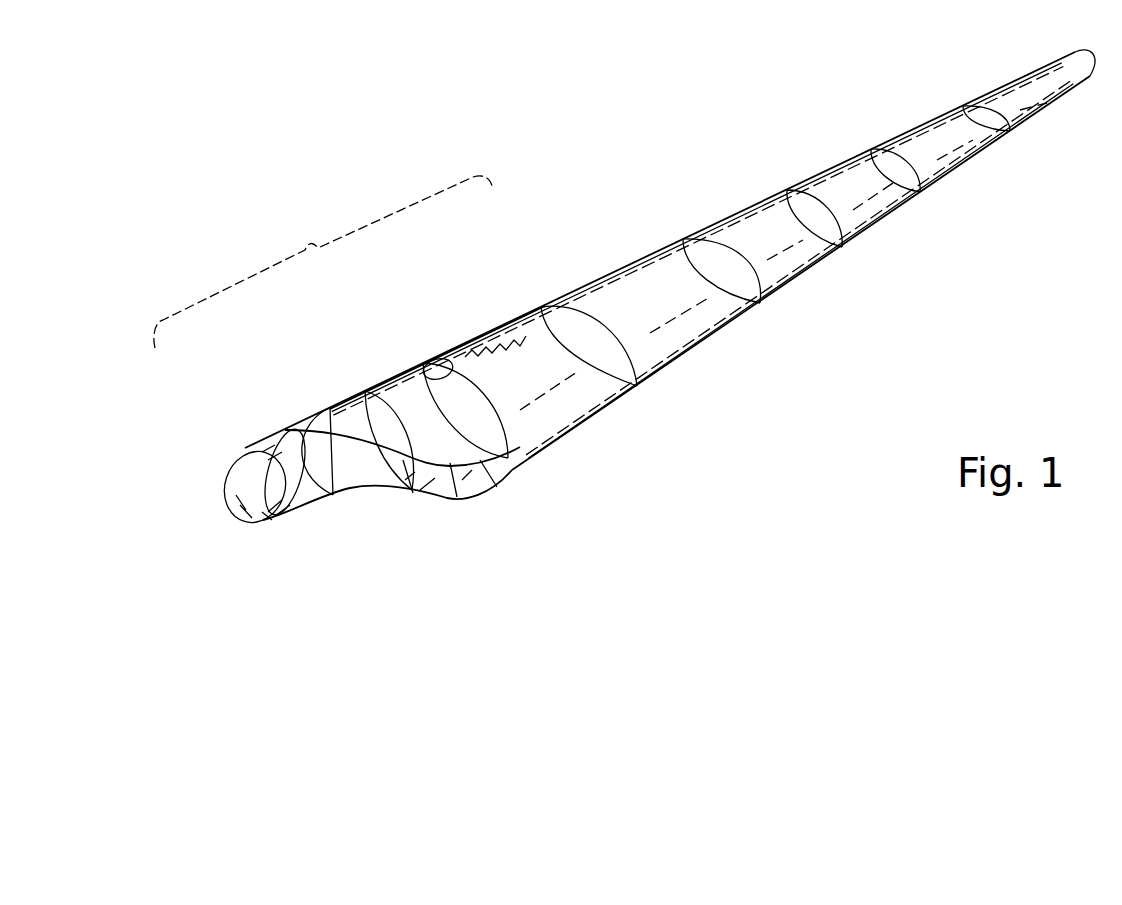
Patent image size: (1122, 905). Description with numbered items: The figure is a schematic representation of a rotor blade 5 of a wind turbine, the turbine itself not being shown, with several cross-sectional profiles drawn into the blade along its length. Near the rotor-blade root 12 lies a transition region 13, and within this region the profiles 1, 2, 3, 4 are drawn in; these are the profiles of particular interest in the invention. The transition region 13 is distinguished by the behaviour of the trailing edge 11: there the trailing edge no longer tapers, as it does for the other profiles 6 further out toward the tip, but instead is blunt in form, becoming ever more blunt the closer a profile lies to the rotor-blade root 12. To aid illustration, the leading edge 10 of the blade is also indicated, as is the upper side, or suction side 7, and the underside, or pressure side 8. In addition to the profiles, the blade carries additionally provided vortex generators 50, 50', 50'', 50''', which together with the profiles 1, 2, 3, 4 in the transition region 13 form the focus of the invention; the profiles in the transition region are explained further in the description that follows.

The profile 1 is at (367, 397).
The profile 2 is at (430, 364).
The profile 3 is at (338, 410).
The profile 4 is at (285, 430).
The rotor blade 5 is at (667, 277).
The profiles 6 is at (592, 282).
The suction side 7 is at (765, 222).
The pressure side 8 is at (750, 318).
The leading edge 10 is at (430, 348).
The trailing edge 11 is at (527, 462).
The rotor-blade root 12 is at (248, 480).
The transition region 13 is at (305, 248).
The vortex generator 50 is at (495, 305).
The vortex generator 50' is at (450, 328).
The vortex generator 50'' is at (475, 512).
The vortex generator 50''' is at (416, 516).